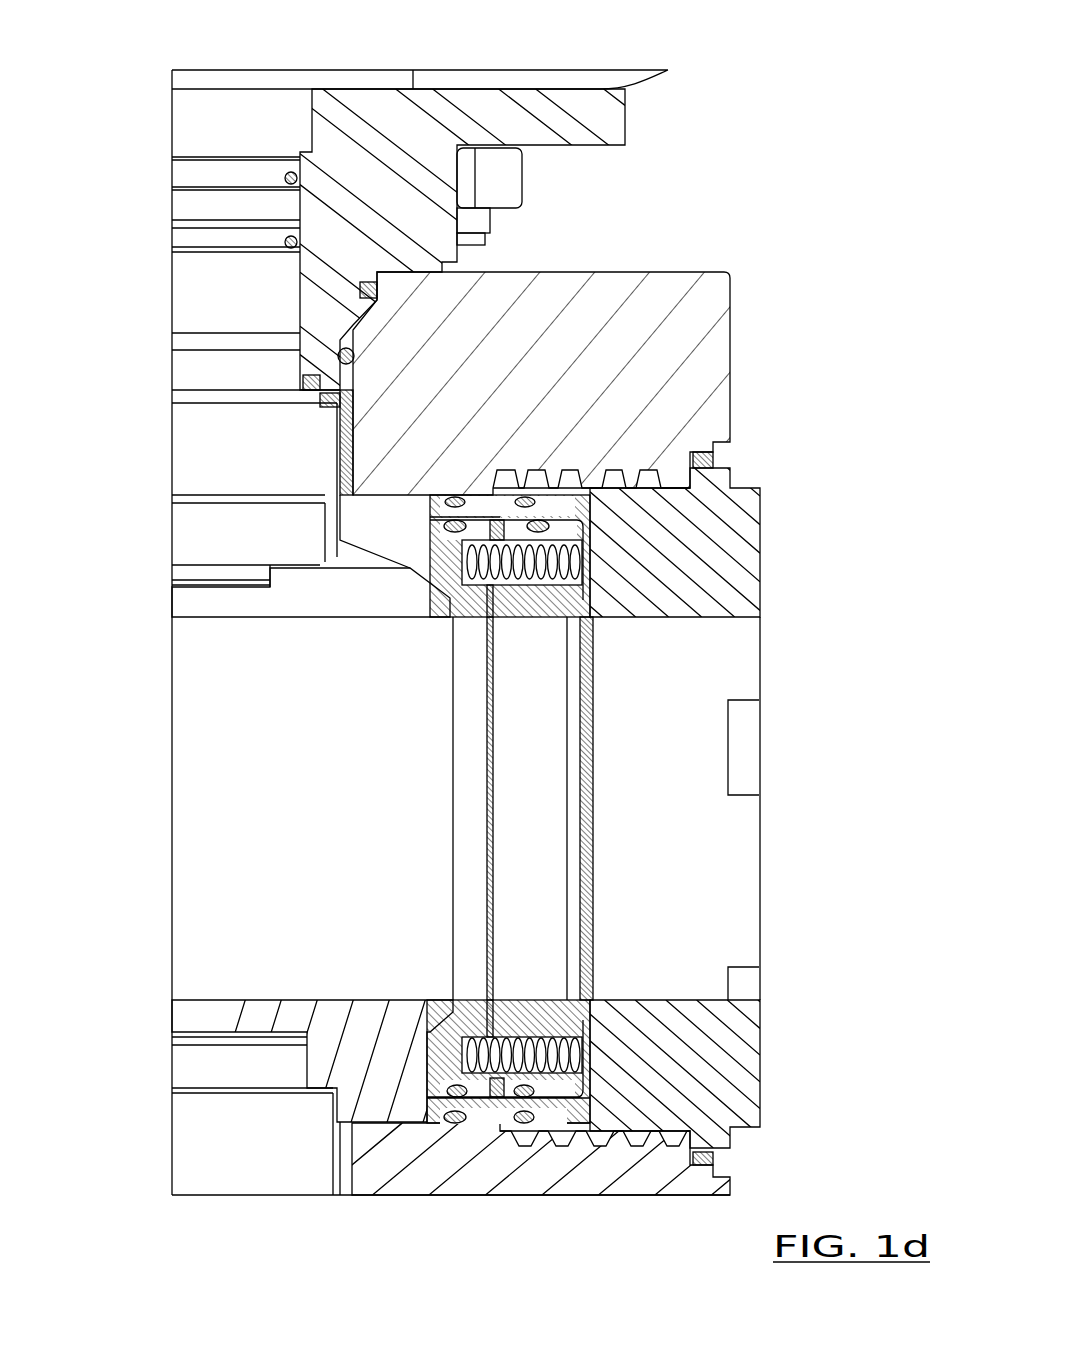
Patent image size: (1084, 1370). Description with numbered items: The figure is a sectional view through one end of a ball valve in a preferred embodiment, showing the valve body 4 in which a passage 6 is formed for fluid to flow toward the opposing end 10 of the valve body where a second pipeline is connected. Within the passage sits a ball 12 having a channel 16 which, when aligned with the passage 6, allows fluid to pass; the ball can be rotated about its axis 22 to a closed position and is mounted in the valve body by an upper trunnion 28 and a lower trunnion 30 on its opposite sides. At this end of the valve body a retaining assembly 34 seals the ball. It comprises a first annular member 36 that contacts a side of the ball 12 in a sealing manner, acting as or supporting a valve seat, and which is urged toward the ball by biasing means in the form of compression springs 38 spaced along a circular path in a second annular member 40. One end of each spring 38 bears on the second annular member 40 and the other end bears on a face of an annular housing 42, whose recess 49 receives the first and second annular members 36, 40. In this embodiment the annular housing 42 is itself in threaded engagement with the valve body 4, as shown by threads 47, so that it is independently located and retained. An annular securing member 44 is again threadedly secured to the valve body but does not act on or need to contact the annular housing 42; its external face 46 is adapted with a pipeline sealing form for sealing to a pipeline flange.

The valve body 4 is at (712, 337).
The passage 6 is at (702, 853).
The opposing end of the valve body 10 is at (777, 522).
The ball 12 is at (375, 585).
The channel 16 is at (237, 920).
The axis 22 is at (220, 89).
The upper trunnion 28 is at (240, 305).
The lower trunnion 30 is at (240, 1140).
The retaining assembly 34 is at (662, 598).
The first annular member 36 is at (437, 1067).
The spring 38 is at (545, 525).
The second annular member 40 is at (470, 495).
The annular housing 42 is at (674, 440).
The annular securing member 44 is at (745, 483).
The external face 46 is at (763, 605).
The threads 47 is at (517, 560).
The recess 49 is at (575, 977).